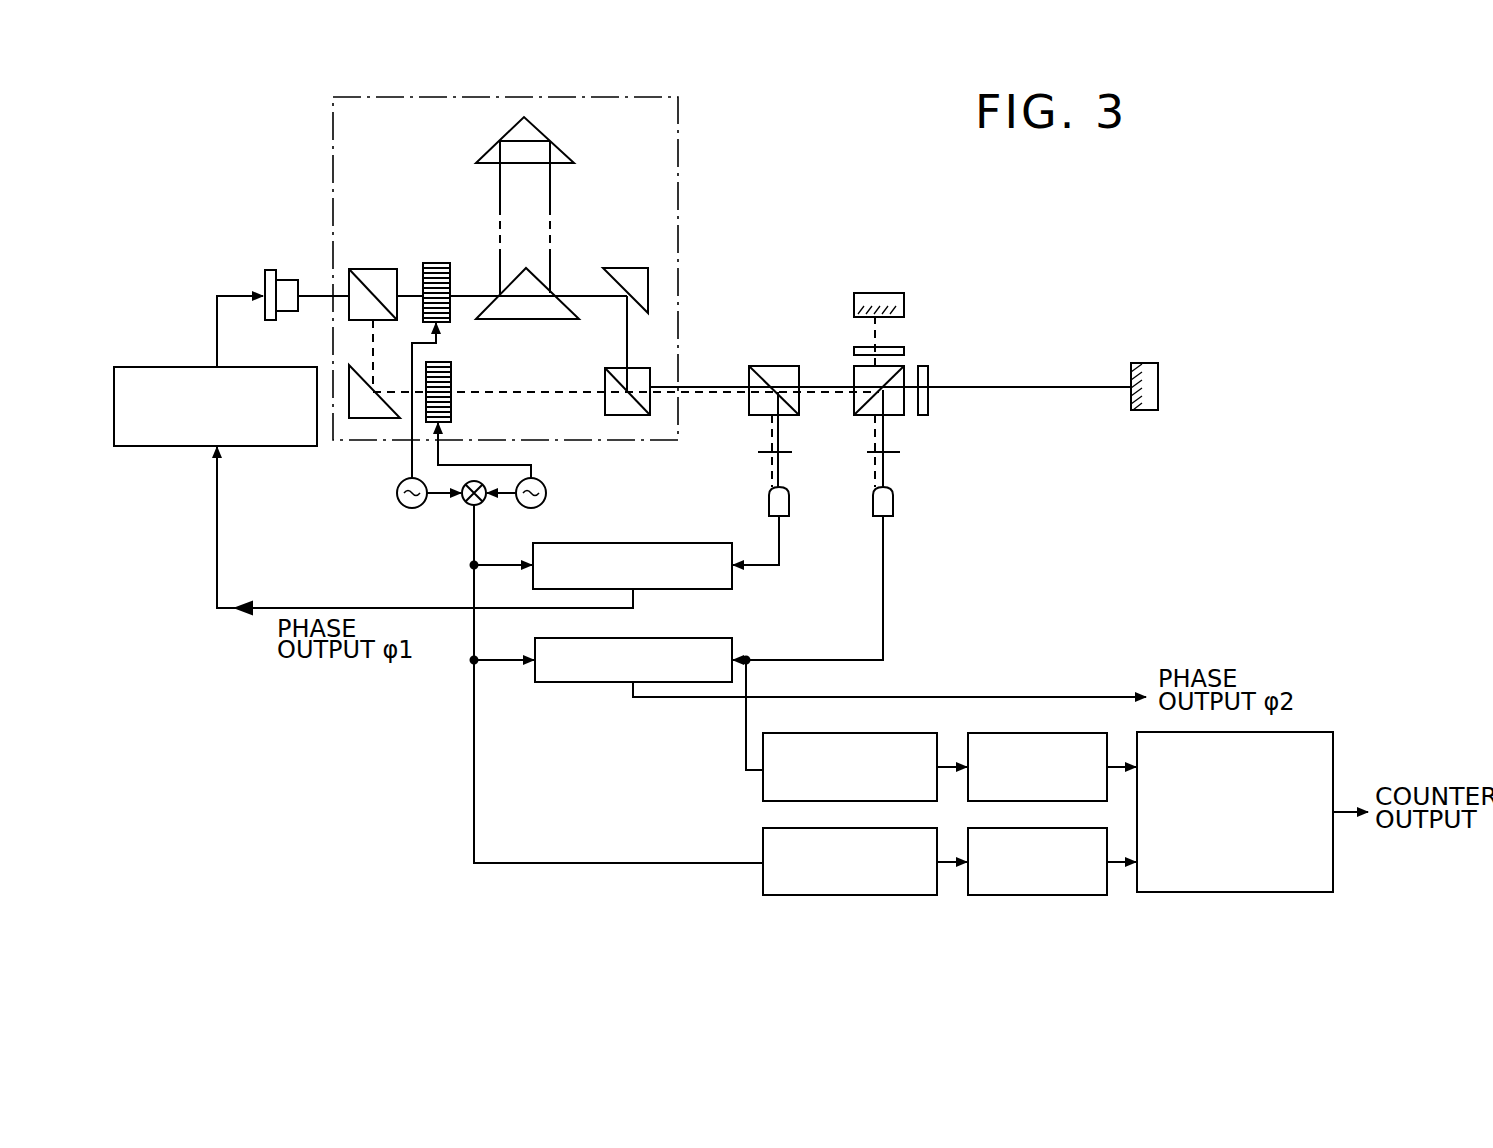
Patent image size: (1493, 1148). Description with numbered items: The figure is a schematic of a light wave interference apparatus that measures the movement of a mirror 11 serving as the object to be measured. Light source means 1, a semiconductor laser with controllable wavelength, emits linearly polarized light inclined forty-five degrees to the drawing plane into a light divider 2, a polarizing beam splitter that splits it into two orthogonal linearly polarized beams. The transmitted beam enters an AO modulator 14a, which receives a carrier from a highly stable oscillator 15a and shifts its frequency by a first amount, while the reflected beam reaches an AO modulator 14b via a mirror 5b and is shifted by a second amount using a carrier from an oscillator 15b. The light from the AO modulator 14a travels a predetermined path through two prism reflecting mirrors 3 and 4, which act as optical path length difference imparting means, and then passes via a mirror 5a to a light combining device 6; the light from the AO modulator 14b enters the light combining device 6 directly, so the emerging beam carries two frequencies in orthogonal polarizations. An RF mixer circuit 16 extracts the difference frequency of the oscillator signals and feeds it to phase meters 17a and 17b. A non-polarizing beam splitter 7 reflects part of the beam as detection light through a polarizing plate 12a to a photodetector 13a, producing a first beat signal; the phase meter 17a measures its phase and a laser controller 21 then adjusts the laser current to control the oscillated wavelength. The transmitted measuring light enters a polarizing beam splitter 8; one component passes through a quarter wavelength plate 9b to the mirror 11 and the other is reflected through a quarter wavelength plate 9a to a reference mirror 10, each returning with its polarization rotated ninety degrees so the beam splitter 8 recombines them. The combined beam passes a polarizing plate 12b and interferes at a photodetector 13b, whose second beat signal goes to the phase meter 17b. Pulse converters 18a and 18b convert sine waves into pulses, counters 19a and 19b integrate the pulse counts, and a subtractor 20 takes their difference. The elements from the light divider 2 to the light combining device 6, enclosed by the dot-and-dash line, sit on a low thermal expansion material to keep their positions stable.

The light source means 1 is at (287, 282).
The light divider 2 is at (372, 278).
The prism reflecting mirror 3 is at (535, 292).
The prism reflecting mirror 4 is at (557, 160).
The mirror 5a is at (626, 280).
The mirror 5b is at (365, 408).
The light combining device 6 is at (615, 372).
The non-polarizing beam splitter 7 is at (770, 372).
The polarizing beam splitter 8 is at (860, 375).
The quarter wavelength plate 9a is at (900, 350).
The quarter wavelength plate 9b is at (930, 382).
The reference mirror 10 is at (875, 295).
The mirror 11 is at (1150, 378).
The polarizing plate 12a is at (794, 454).
The polarizing plate 12b is at (903, 454).
The photodetector 13a is at (789, 507).
The photodetector 13b is at (893, 507).
The AO modulator 14a is at (437, 265).
The AO modulator 14b is at (451, 382).
The oscillator 15a is at (398, 493).
The oscillator 15b is at (545, 500).
The RF mixer circuit 16 is at (465, 507).
The phase meter 17a is at (670, 591).
The phase meter 17b is at (575, 686).
The pulse converter 18a is at (828, 732).
The pulse converter 18b is at (838, 896).
The counter 19a is at (1008, 732).
The counter 19b is at (1008, 896).
The subtractor 20 is at (1233, 893).
The laser controller 21 is at (142, 448).